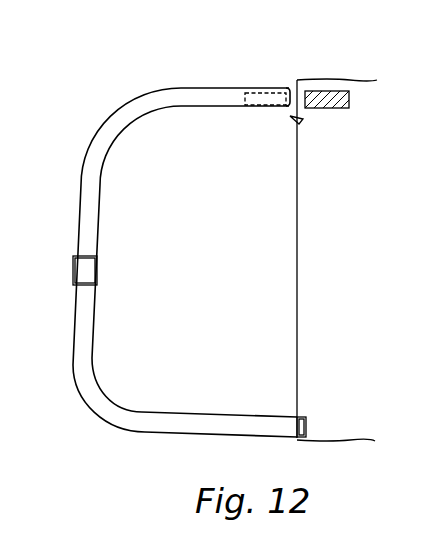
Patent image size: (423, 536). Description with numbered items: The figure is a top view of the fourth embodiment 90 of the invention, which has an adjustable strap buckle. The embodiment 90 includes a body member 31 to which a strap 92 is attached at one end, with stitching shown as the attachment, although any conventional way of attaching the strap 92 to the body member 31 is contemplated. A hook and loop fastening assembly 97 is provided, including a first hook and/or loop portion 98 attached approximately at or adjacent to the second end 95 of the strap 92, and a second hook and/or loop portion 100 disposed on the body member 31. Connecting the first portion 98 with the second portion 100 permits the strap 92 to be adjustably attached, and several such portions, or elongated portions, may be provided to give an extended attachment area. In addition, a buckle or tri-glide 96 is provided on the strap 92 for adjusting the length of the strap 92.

The strap 92 is at (128, 108).
The second end 95 is at (265, 88).
The first hook and/or loop portion 98 is at (252, 107).
The buckle or tri-glide 96 is at (72, 259).
The body member 31 is at (352, 297).
The fourth embodiment 90 is at (235, 297).
The second hook and/or loop portion 100 is at (349, 98).
The hook and loop fastening assembly 97 is at (302, 121).